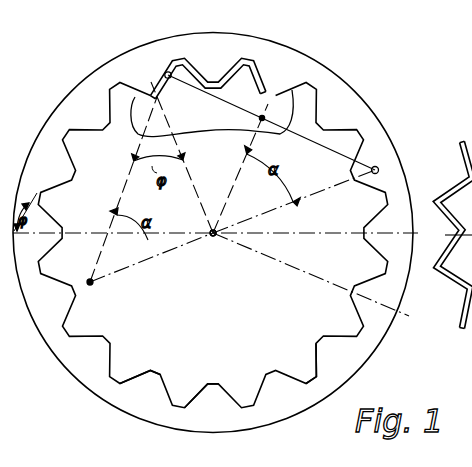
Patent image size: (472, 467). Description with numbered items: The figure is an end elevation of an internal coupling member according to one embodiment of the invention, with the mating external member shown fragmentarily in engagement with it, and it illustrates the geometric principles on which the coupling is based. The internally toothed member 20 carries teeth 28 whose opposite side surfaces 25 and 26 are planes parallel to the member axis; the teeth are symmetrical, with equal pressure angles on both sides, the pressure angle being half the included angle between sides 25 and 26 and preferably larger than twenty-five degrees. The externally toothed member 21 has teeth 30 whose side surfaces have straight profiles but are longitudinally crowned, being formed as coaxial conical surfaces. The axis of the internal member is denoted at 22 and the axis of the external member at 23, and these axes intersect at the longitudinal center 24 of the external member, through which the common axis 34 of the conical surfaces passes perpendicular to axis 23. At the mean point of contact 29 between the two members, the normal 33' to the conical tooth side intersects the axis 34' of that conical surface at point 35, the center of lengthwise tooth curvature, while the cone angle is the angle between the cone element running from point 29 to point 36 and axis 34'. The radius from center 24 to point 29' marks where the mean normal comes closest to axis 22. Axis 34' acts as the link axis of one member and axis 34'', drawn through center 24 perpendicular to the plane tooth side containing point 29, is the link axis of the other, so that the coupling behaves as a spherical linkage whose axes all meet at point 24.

The internally toothed member 20 is at (364, 113).
The externally toothed member 21 is at (200, 132).
The axis of the internal member 22 is at (211, 236).
The axis of the external member 23 is at (213, 233).
The point of intersection of the axes 24 is at (213, 233).
The tooth side surface 25 is at (346, 331).
The tooth side surface 26 is at (313, 357).
The teeth of the internally toothed member 28 is at (201, 392).
The mean point of contact 29 is at (149, 67).
The closest-approach point of the mean normal 29' is at (246, 104).
The teeth of the externally toothed member 30 is at (200, 67).
The normal to the conical tooth side 33' is at (271, 122).
The common axis of the conical surfaces 34 is at (215, 221).
The axis of the conical tooth side 34' is at (294, 198).
The link axis of the other member 34'' is at (311, 274).
The center of lengthwise tooth curvature 35 is at (378, 167).
The end point of cone element 36 is at (92, 285).